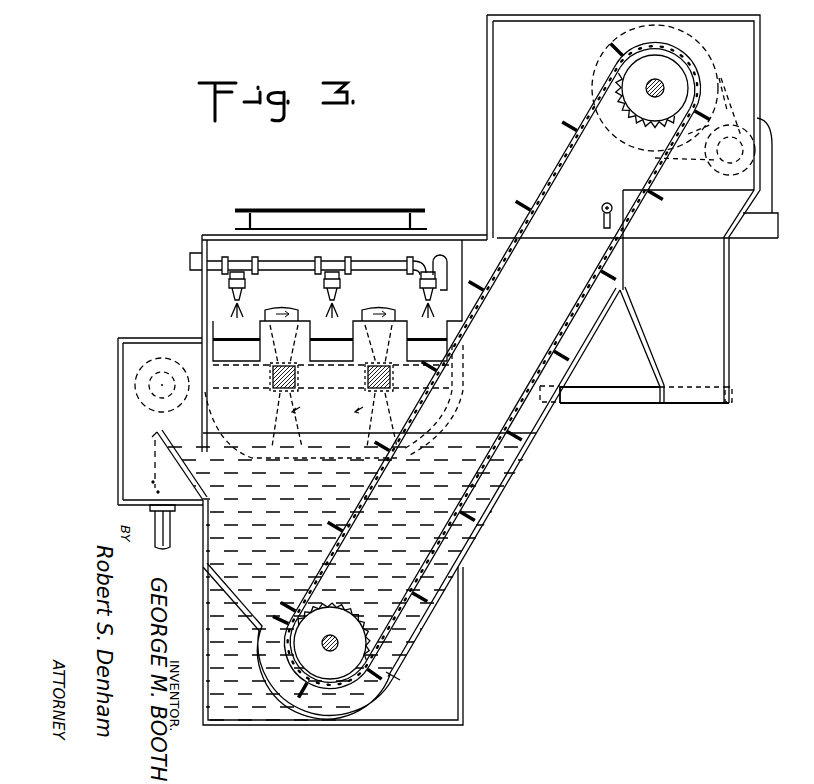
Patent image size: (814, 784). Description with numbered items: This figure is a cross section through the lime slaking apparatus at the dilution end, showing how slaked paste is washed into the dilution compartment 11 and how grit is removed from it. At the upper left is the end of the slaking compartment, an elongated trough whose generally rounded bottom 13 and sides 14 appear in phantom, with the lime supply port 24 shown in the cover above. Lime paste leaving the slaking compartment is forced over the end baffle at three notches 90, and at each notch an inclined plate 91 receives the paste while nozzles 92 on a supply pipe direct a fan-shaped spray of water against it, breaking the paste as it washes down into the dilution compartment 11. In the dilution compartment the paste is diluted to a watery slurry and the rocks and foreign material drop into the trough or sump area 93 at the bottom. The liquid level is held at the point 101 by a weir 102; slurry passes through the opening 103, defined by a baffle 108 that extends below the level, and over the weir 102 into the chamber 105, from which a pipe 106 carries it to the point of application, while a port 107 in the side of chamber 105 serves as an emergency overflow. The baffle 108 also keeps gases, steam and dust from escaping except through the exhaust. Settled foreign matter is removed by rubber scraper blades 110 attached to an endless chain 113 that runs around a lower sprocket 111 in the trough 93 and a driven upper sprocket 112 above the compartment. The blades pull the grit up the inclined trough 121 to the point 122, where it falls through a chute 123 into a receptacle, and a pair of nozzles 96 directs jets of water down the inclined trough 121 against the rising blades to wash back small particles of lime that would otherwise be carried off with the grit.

The dilution compartment 11 is at (236, 546).
The rounded bottom 13 is at (460, 419).
The sides 14 is at (466, 366).
The lime supply port 24 is at (330, 208).
The notches 90 is at (231, 330).
The inclined plate 91 is at (230, 352).
The nozzles 92 is at (323, 288).
The trough or sump area 93 is at (357, 702).
The nozzles 96 is at (601, 226).
The liquid level point 101 is at (195, 431).
The weir 102 is at (185, 443).
The opening 103 is at (178, 455).
The chamber 105 is at (124, 490).
The pipe 106 is at (172, 531).
The port 107 is at (160, 358).
The baffle 108 is at (207, 431).
The scraper blades 110 is at (392, 666).
The lower sprocket 111 is at (308, 657).
The upper sprocket 112 is at (678, 72).
The endless chain or belt 113 is at (555, 168).
The inclined trough 121 is at (493, 517).
The discharge point 122 is at (627, 292).
The chute 123 is at (678, 354).